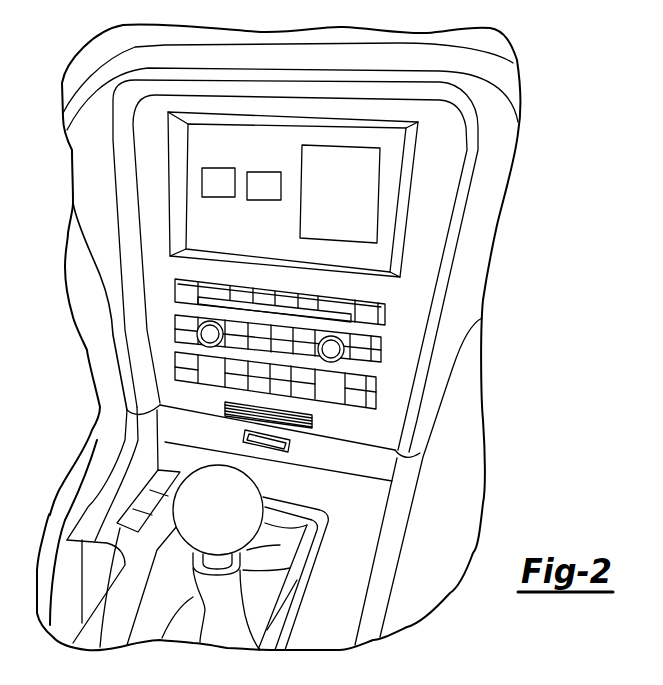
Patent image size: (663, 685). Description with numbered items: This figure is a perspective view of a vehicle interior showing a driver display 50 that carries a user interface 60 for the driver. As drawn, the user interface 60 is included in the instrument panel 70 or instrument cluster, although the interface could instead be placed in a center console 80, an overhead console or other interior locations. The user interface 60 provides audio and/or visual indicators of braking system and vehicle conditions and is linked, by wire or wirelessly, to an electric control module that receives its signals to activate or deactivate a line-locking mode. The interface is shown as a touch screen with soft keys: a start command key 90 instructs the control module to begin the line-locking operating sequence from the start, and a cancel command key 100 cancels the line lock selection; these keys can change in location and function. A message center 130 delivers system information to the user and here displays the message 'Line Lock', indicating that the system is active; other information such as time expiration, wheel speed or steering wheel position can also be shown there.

The driver display 50 is at (562, 93).
The user interface 60 is at (417, 166).
The instrument panel 70 is at (483, 243).
The center console 80 is at (102, 537).
The start command key 90 is at (221, 184).
The cancel command key 100 is at (270, 190).
The message center 130 is at (367, 206).